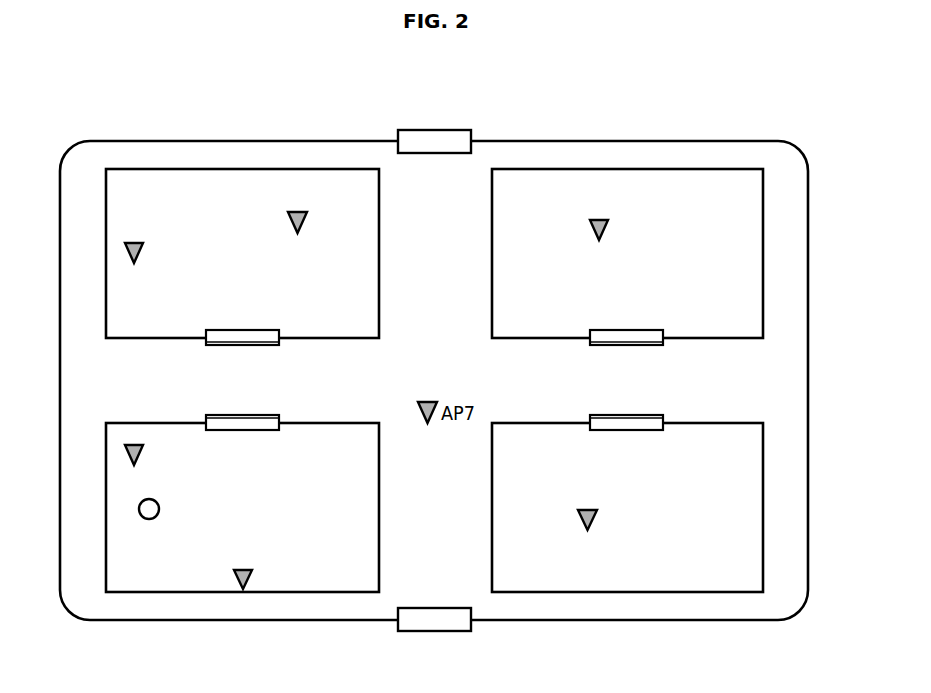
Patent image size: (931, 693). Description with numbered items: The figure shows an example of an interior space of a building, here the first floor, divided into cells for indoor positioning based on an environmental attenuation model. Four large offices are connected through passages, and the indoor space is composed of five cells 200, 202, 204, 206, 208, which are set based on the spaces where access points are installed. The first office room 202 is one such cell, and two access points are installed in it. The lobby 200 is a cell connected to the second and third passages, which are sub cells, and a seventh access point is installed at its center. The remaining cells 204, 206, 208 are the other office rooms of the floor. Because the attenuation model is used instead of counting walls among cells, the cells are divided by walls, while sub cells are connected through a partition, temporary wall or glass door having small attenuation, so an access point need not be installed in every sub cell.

The lobby 200 is at (443, 213).
The room R001 202 is at (273, 592).
The cell 204 is at (243, 169).
The cell 206 is at (627, 169).
The cell 208 is at (627, 592).